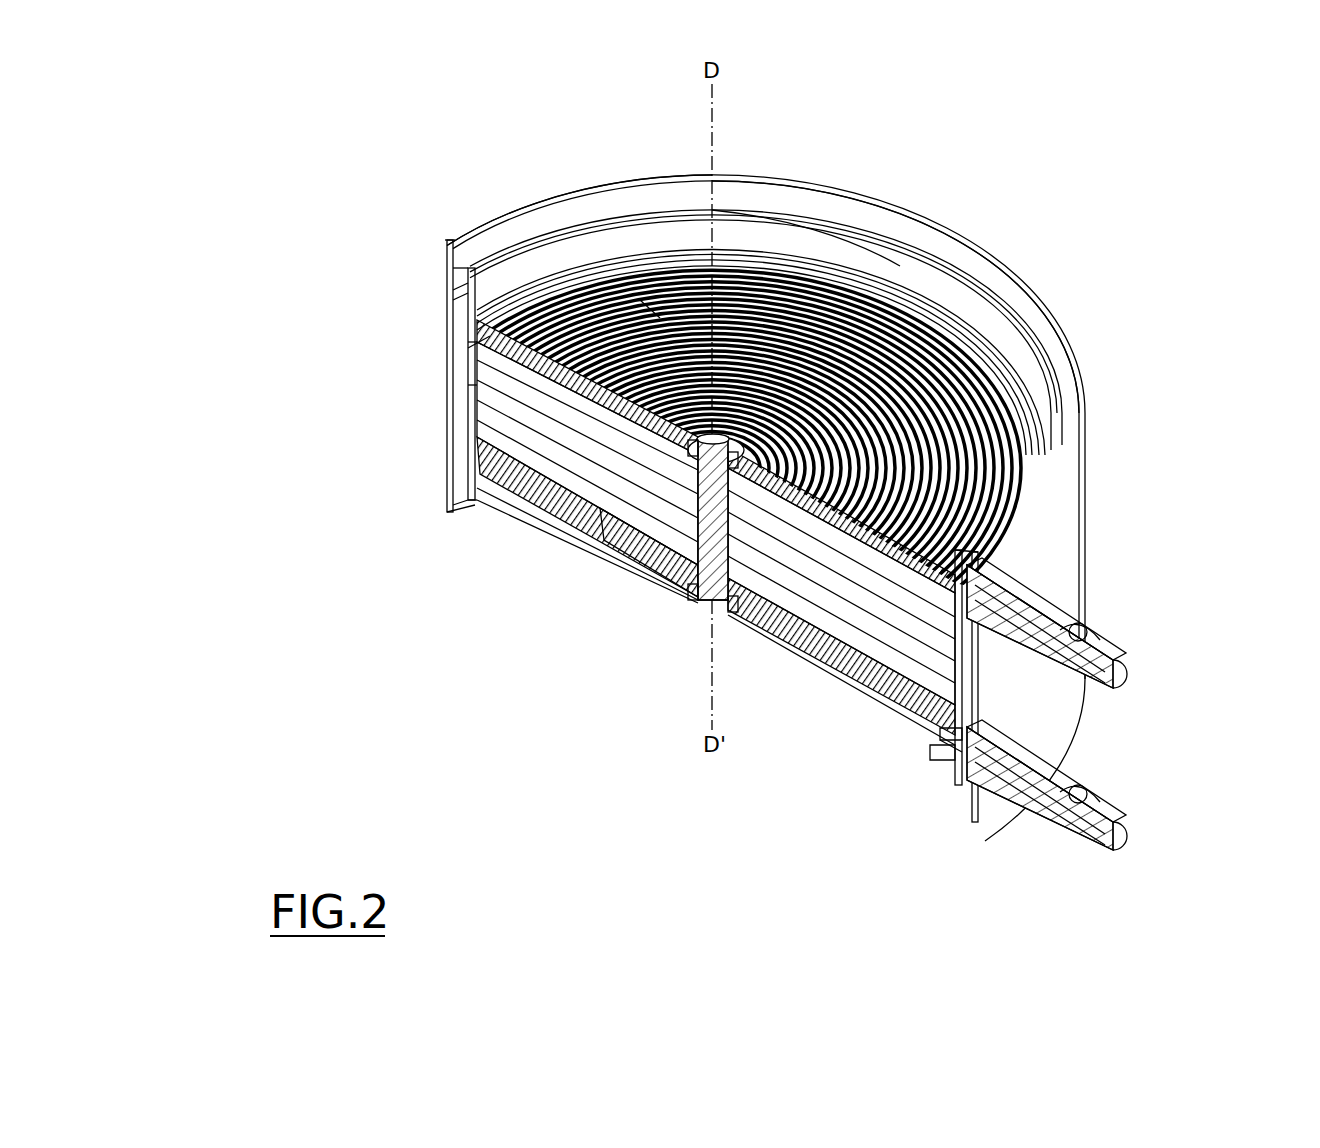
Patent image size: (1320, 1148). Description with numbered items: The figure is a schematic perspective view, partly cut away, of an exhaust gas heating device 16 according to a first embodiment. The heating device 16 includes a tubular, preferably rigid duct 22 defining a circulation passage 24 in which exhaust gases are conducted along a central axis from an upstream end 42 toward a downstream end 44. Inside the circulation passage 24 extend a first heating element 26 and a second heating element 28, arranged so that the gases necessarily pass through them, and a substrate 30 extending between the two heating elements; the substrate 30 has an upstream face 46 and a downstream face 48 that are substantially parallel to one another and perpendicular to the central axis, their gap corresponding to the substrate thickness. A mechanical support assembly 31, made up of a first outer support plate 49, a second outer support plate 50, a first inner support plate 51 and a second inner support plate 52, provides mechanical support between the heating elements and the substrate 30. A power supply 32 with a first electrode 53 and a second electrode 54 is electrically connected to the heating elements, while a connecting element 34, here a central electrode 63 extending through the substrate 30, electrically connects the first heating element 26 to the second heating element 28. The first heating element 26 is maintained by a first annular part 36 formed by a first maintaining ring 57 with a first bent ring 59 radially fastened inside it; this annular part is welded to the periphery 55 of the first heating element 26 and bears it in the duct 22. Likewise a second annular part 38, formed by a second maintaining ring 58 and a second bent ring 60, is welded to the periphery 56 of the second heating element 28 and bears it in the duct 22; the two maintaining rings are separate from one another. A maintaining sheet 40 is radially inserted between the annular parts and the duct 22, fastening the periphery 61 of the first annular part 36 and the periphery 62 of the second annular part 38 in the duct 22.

The heating device 16 is at (878, 392).
The duct 22 is at (462, 250).
The circulation passage 24 is at (650, 705).
The first heating element 26 is at (535, 508).
The second heating element 28 is at (990, 385).
The substrate 30 is at (490, 415).
The mechanical support assembly 31 is at (655, 312).
The power supply 32 is at (1125, 638).
The connecting element 34 is at (700, 556).
The first annular part 36 is at (960, 790).
The second annular part 38 is at (995, 325).
The maintaining sheet 40 is at (460, 300).
The upstream end 42 is at (468, 522).
The downstream end 44 is at (512, 205).
The upstream face 46 is at (885, 620).
The downstream face 48 is at (1010, 440).
The first outer support plate 49 is at (485, 456).
The second outer support plate 50 is at (470, 345).
The first inner support plate 51 is at (725, 600).
The second inner support plate 52 is at (700, 462).
The first electrode 53 is at (1112, 830).
The second electrode 54 is at (1115, 690).
The periphery of the first heating element 55 is at (935, 735).
The periphery of the second heating element 56 is at (478, 325).
The first maintaining ring 57 is at (940, 757).
The second maintaining ring 58 is at (920, 280).
The first bent ring 59 is at (945, 745).
The second bent ring 60 is at (567, 270).
The periphery of the first annular maintaining part 61 is at (1000, 832).
The periphery of the second annular maintaining part 62 is at (462, 292).
The central electrode 63 is at (690, 530).